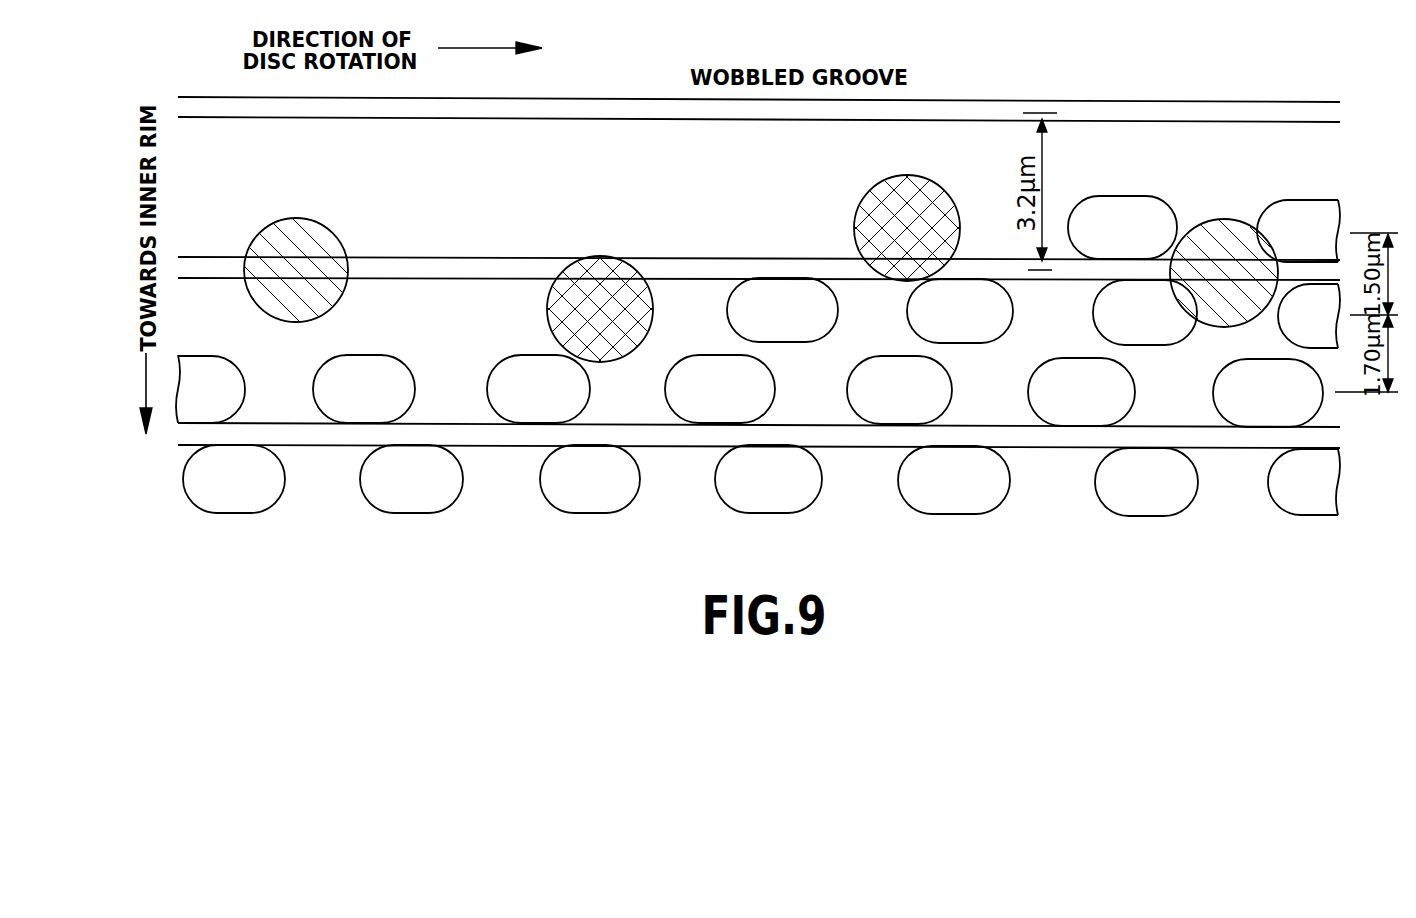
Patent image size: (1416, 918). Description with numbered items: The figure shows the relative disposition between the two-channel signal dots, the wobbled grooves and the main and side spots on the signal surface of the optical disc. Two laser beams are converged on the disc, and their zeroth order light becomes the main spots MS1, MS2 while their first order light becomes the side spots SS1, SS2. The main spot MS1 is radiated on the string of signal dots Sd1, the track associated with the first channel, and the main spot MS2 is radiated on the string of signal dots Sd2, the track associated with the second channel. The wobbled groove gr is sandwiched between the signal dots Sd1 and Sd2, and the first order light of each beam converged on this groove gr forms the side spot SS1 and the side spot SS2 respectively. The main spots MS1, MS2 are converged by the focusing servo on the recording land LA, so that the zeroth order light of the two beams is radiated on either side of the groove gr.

The groove gr is at (548, 109).
The recording land LA is at (423, 240).
The side spot SS1 is at (1214, 234).
The side spot SS2 is at (326, 237).
The main spot MS1 is at (604, 268).
The main spot MS2 is at (902, 188).
The signal dots Sd1 is at (1153, 332).
The signal dots Sd2 is at (1122, 210).